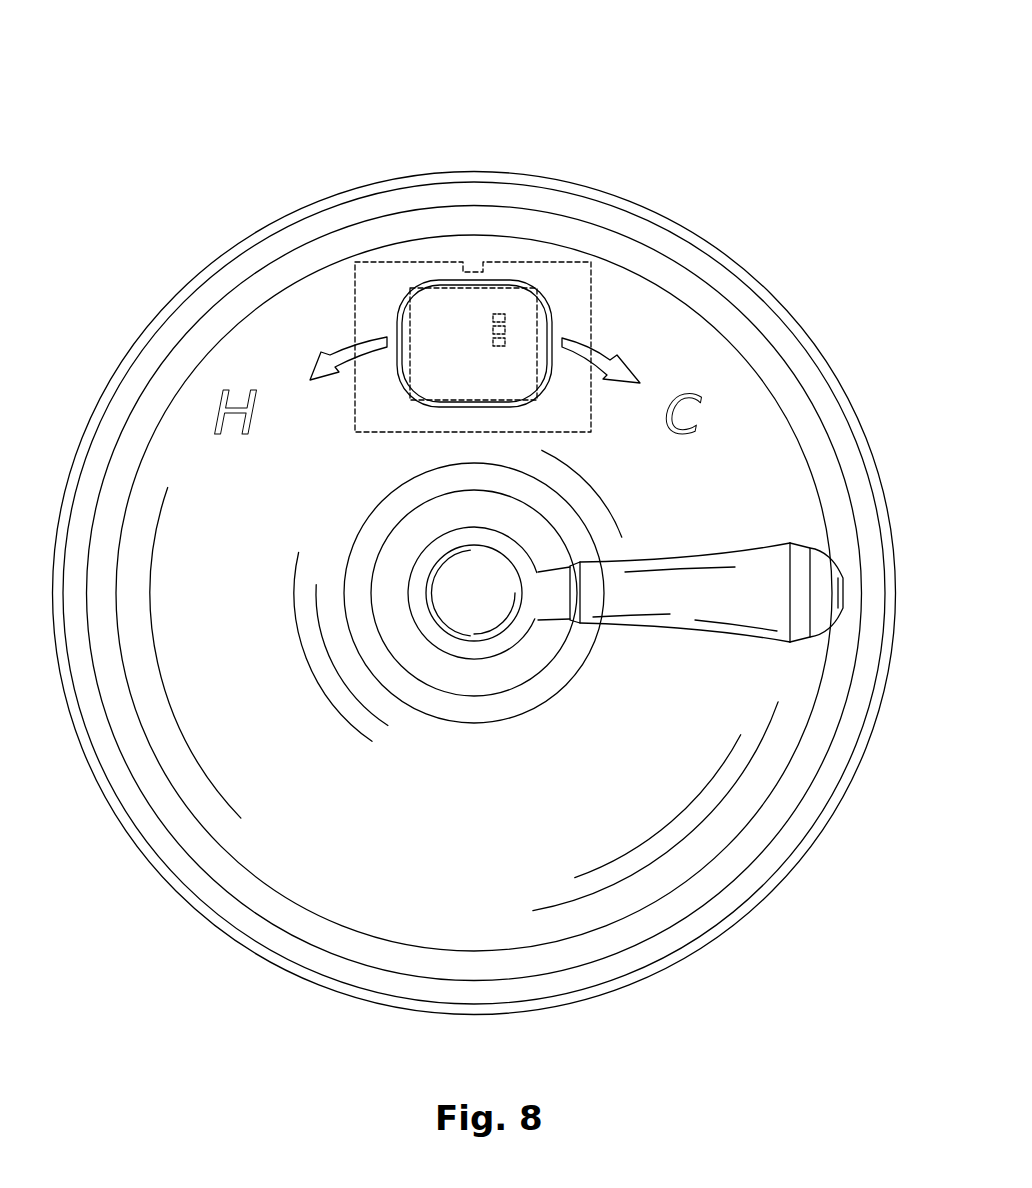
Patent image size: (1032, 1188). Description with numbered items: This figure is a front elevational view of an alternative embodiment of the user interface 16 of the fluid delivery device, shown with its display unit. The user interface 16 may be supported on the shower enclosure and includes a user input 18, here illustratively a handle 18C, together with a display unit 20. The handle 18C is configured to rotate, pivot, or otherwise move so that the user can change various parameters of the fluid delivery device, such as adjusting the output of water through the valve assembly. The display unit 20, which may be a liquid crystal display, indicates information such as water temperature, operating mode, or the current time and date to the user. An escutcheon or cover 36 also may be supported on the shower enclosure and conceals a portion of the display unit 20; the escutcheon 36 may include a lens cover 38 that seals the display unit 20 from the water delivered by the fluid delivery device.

The user interface 16 is at (598, 131).
The user input 18 is at (528, 720).
The handle 18C is at (748, 570).
The display unit 20 is at (430, 274).
The escutcheon 36 is at (188, 777).
The lens cover 38 is at (548, 318).